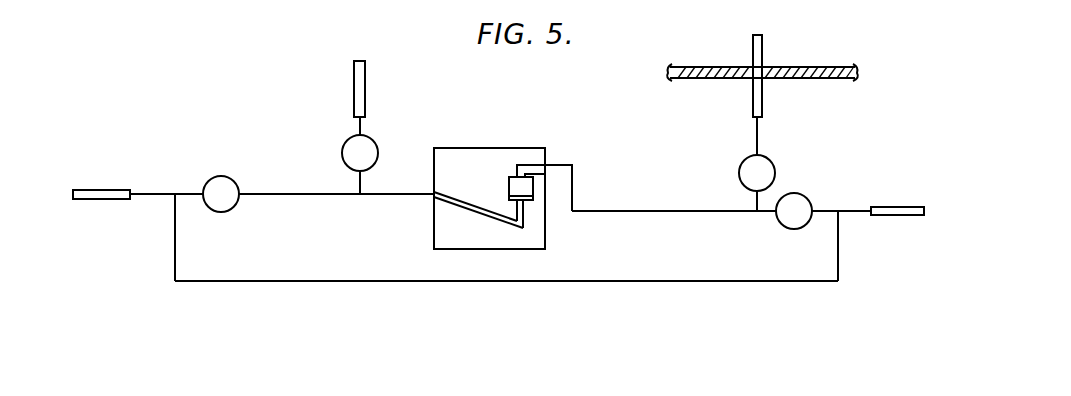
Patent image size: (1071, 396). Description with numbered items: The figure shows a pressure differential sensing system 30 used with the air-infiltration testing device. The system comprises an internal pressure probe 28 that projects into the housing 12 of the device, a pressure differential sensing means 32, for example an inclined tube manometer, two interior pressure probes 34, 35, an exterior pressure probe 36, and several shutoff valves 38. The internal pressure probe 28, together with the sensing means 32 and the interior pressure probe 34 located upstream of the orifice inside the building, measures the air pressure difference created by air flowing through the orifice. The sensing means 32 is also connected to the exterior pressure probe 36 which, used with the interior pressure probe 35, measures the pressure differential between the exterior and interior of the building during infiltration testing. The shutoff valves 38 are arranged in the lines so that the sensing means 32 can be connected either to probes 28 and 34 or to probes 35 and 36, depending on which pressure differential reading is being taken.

The housing 12 is at (812, 78).
The internal pressure probe 28 is at (757, 50).
The pressure differential sensing system 30 is at (684, 288).
The pressure differential sensing means 32 is at (510, 148).
The interior pressure probe 34 is at (107, 190).
The interior pressure probe 35 is at (888, 207).
The exterior pressure probe 36 is at (365, 97).
The shutoff valves 38 is at (228, 176).